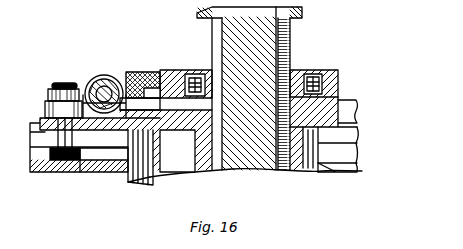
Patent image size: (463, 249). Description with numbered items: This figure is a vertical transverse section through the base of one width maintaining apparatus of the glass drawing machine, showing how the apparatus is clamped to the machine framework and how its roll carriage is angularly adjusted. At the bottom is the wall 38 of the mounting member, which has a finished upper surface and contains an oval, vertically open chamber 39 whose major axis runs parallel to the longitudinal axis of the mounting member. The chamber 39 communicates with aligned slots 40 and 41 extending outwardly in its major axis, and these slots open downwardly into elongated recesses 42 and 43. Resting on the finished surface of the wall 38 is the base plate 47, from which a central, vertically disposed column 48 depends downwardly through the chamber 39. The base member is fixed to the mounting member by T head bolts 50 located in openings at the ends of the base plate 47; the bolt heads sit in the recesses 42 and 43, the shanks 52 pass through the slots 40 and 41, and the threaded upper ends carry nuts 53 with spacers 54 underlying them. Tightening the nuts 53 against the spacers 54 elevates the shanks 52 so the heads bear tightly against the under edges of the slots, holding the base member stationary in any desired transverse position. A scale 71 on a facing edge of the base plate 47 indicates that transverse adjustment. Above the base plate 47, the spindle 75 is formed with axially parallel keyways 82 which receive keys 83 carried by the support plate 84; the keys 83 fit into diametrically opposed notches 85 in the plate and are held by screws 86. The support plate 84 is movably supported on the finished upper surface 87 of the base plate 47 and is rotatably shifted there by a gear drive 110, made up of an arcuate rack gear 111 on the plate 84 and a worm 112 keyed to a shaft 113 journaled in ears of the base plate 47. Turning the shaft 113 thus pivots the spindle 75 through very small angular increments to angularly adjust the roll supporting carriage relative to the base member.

The scale 71 is at (308, 12).
The spindle 75 is at (298, 35).
The keyways 82 is at (214, 31).
The keys 83 is at (215, 72).
The notches 85 is at (203, 74).
The screws 86 is at (326, 71).
The support plate 84 is at (338, 90).
The base plate 47 is at (336, 122).
The slot 41 is at (336, 136).
The recess 43 is at (336, 152).
The wall 38 is at (333, 169).
The column 48 is at (188, 173).
The chamber 39 is at (158, 168).
The recess 42 is at (115, 155).
The shank 52 is at (65, 155).
The slot 40 is at (46, 140).
The spacer 54 is at (50, 102).
The nut 53 is at (56, 86).
The T head bolt 50 is at (65, 72).
The gear drive 110 is at (116, 63).
The shaft 113 is at (102, 83).
The worm 112 is at (120, 82).
The arcuate rack gear 111 is at (148, 72).
The finished upper surface 87 is at (177, 151).